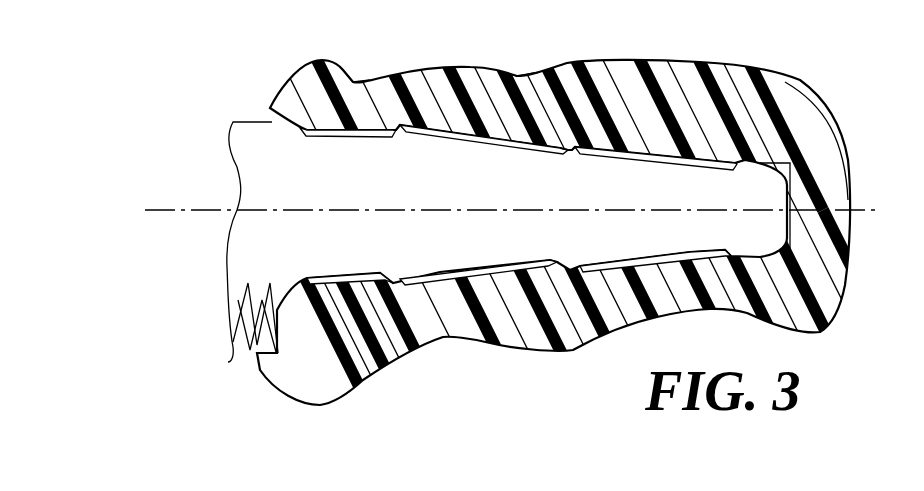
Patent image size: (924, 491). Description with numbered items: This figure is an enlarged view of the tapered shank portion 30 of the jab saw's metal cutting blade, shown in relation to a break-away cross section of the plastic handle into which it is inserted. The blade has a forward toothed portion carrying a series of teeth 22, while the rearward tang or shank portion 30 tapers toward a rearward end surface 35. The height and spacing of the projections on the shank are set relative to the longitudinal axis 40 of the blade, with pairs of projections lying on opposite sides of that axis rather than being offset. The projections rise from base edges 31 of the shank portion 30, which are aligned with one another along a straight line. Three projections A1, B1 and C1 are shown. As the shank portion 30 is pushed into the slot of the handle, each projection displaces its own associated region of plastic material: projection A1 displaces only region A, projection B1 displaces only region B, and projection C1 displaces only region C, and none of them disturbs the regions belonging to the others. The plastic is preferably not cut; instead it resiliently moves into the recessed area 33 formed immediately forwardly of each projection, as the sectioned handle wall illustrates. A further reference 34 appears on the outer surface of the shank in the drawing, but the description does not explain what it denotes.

The teeth 22 is at (228, 362).
The shank portion 30 is at (646, 124).
The base edges 31 is at (322, 140).
The recessed area 33 is at (352, 82).
The groove in outer surface 34 is at (517, 76).
The rearward end surface 35 is at (847, 250).
The longitudinal axis 40 is at (195, 210).
The region of plastic material A is at (760, 150).
The region of plastic material B is at (568, 122).
The region of plastic material C is at (405, 112).
The projection A1 is at (738, 165).
The projection B1 is at (572, 152).
The projection C1 is at (398, 133).